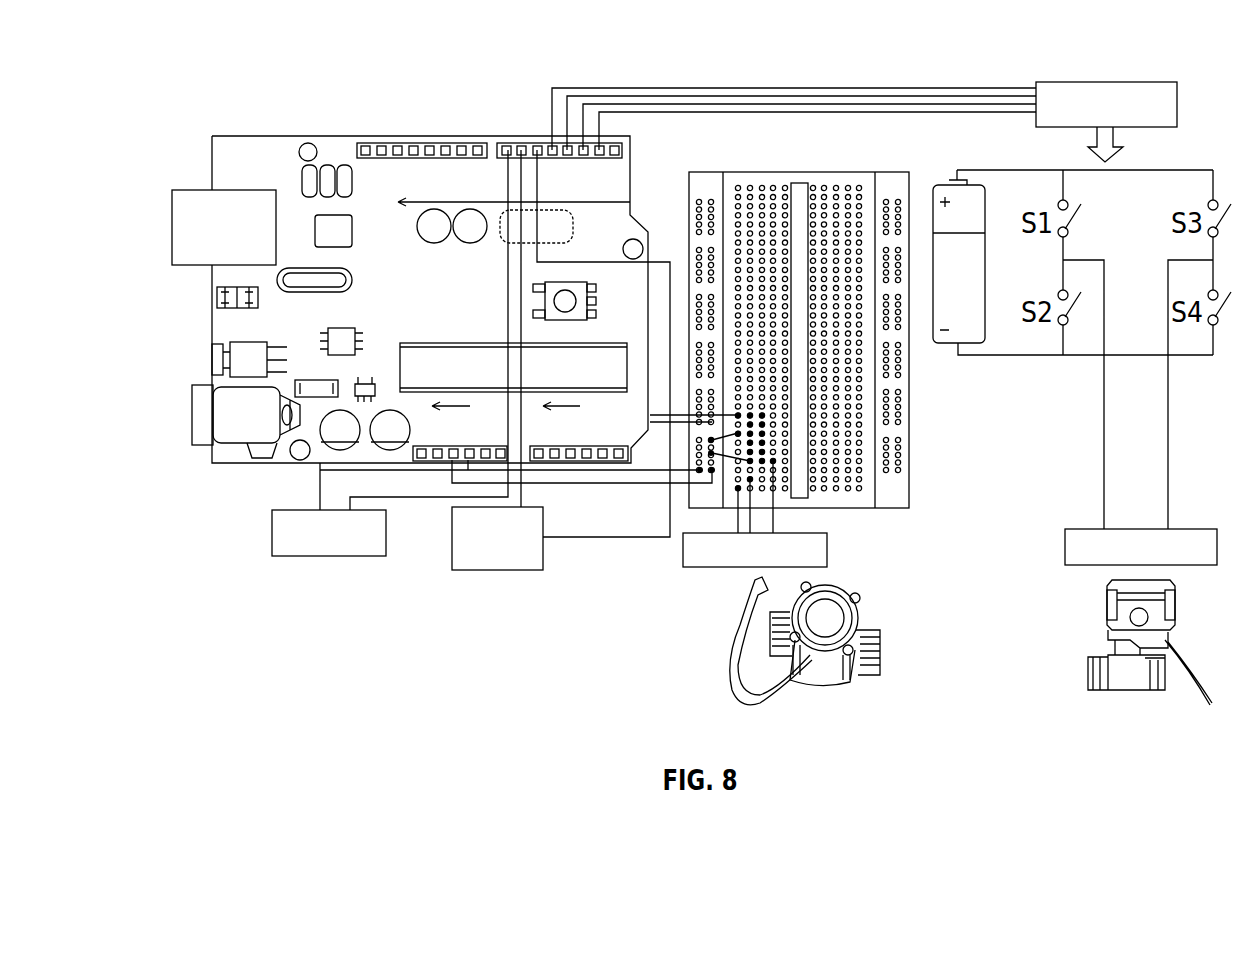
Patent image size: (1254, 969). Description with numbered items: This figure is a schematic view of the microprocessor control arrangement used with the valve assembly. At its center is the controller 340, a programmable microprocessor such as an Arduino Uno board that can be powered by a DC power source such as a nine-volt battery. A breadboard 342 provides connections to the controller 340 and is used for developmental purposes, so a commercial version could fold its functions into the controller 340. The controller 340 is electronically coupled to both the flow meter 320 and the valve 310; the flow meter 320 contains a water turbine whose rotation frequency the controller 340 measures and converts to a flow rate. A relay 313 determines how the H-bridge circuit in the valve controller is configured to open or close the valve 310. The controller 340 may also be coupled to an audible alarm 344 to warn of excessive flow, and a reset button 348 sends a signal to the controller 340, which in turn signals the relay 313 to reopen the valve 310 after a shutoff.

The controller 340 is at (267, 136).
The breadboard 342 is at (910, 425).
The relay 313 is at (1120, 82).
The audible alarm 344 is at (328, 557).
The reset button 348 is at (507, 571).
The flow meter 320 is at (683, 570).
The valve 310 is at (1088, 670).